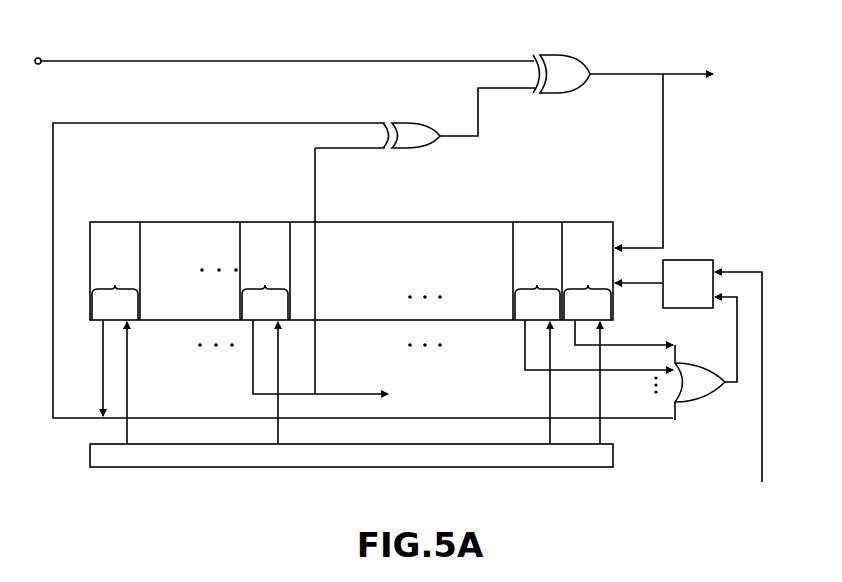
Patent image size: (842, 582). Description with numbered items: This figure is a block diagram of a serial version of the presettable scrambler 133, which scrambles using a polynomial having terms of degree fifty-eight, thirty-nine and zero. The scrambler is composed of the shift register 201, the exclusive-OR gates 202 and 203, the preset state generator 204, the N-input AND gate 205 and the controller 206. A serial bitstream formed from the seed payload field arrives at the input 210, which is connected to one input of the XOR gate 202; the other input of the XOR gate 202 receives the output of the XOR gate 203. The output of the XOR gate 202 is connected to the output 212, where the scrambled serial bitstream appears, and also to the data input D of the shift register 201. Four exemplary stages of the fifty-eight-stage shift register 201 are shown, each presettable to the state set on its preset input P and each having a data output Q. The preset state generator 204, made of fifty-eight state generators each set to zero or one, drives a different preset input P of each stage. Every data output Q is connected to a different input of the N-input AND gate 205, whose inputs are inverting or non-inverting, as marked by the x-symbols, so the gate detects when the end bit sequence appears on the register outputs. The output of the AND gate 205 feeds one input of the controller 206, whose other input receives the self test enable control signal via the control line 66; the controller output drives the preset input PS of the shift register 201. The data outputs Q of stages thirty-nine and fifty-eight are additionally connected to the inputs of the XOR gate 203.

The input 210 is at (38, 58).
The output 212 is at (710, 70).
The presettable scrambler 133 is at (538, 176).
The shift register 201 is at (398, 221).
The XOR gate 202 is at (570, 57).
The XOR gate 203 is at (400, 118).
The preset state generator 204 is at (613, 456).
The N-input AND gate 205 is at (700, 402).
The controller 206 is at (697, 260).
The control line 66 is at (763, 330).